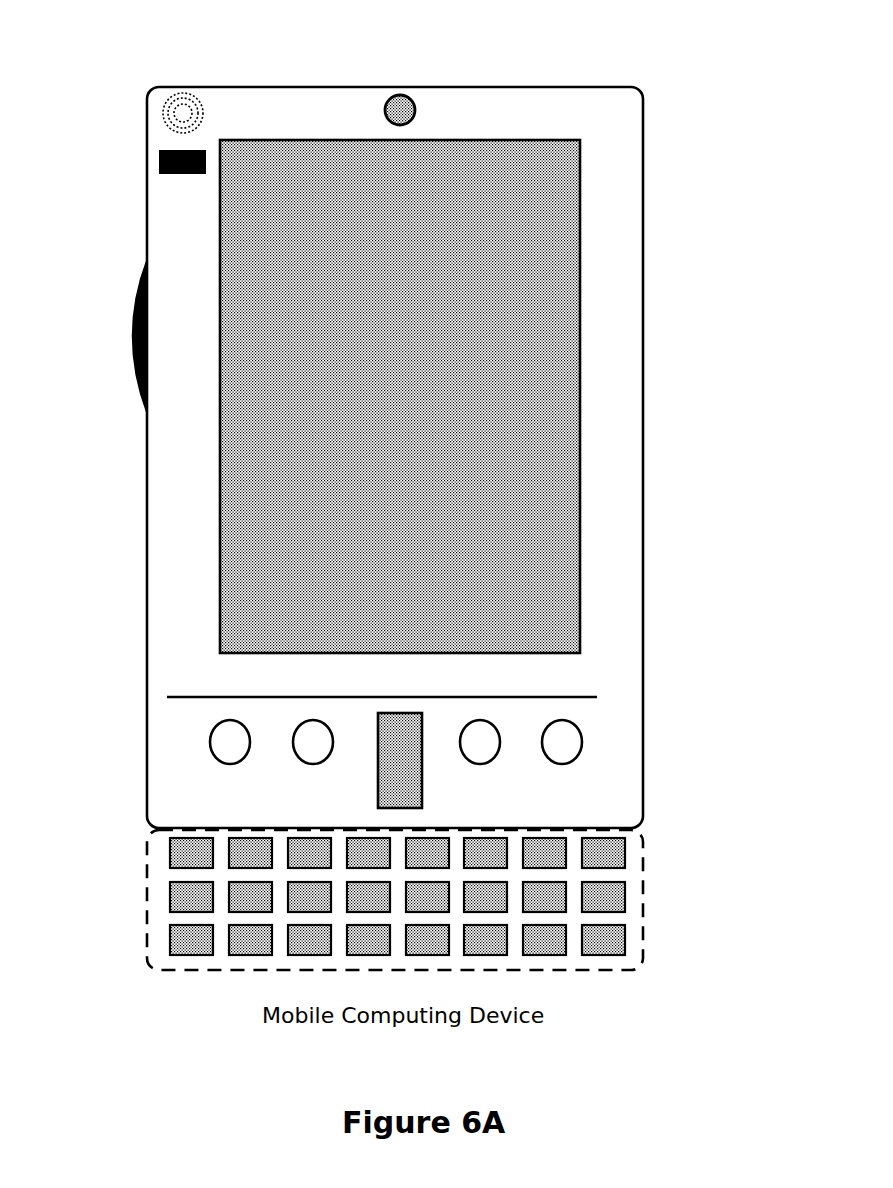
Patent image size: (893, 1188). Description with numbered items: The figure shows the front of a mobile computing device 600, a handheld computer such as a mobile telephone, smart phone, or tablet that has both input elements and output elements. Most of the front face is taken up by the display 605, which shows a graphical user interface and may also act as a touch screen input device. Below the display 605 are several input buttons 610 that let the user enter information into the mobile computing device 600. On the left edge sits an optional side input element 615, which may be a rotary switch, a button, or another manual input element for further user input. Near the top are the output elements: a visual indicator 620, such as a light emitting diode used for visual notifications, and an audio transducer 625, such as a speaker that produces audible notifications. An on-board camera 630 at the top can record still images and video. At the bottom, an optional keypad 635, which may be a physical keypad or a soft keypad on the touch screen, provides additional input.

The mobile computing device 600 is at (646, 113).
The display 605 is at (248, 490).
The input buttons 610 is at (378, 769).
The side input element 615 is at (126, 321).
The visual indicator 620 is at (160, 160).
The audio transducer 625 is at (163, 105).
The on-board camera 630 is at (392, 95).
The keypad 635 is at (160, 900).